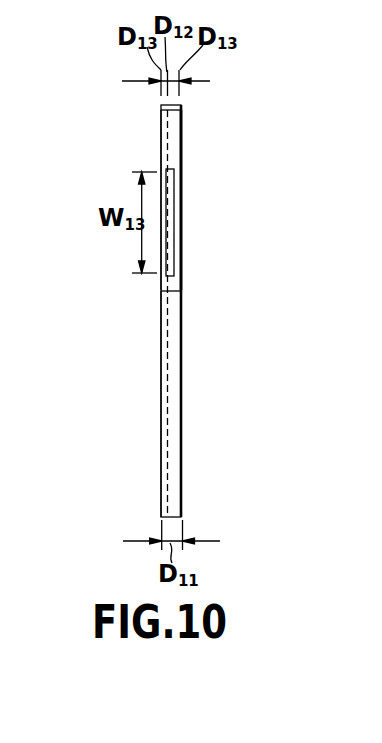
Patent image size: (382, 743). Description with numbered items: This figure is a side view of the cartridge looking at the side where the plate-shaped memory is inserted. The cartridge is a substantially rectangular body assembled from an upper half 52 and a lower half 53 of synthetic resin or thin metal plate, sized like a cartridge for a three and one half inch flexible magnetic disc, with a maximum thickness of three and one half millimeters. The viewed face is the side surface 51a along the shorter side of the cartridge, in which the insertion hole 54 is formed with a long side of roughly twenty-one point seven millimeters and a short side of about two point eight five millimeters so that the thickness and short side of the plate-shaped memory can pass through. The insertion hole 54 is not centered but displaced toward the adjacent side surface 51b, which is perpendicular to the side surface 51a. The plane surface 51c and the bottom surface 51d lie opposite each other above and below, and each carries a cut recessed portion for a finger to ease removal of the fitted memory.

The side surface 51a is at (177, 395).
The side surface 51b is at (180, 106).
The plane surface 51c is at (181, 150).
The bottom surface 51d is at (160, 146).
The upper half 52 is at (161, 313).
The lower half 53 is at (182, 316).
The insertion hole 54 is at (172, 227).